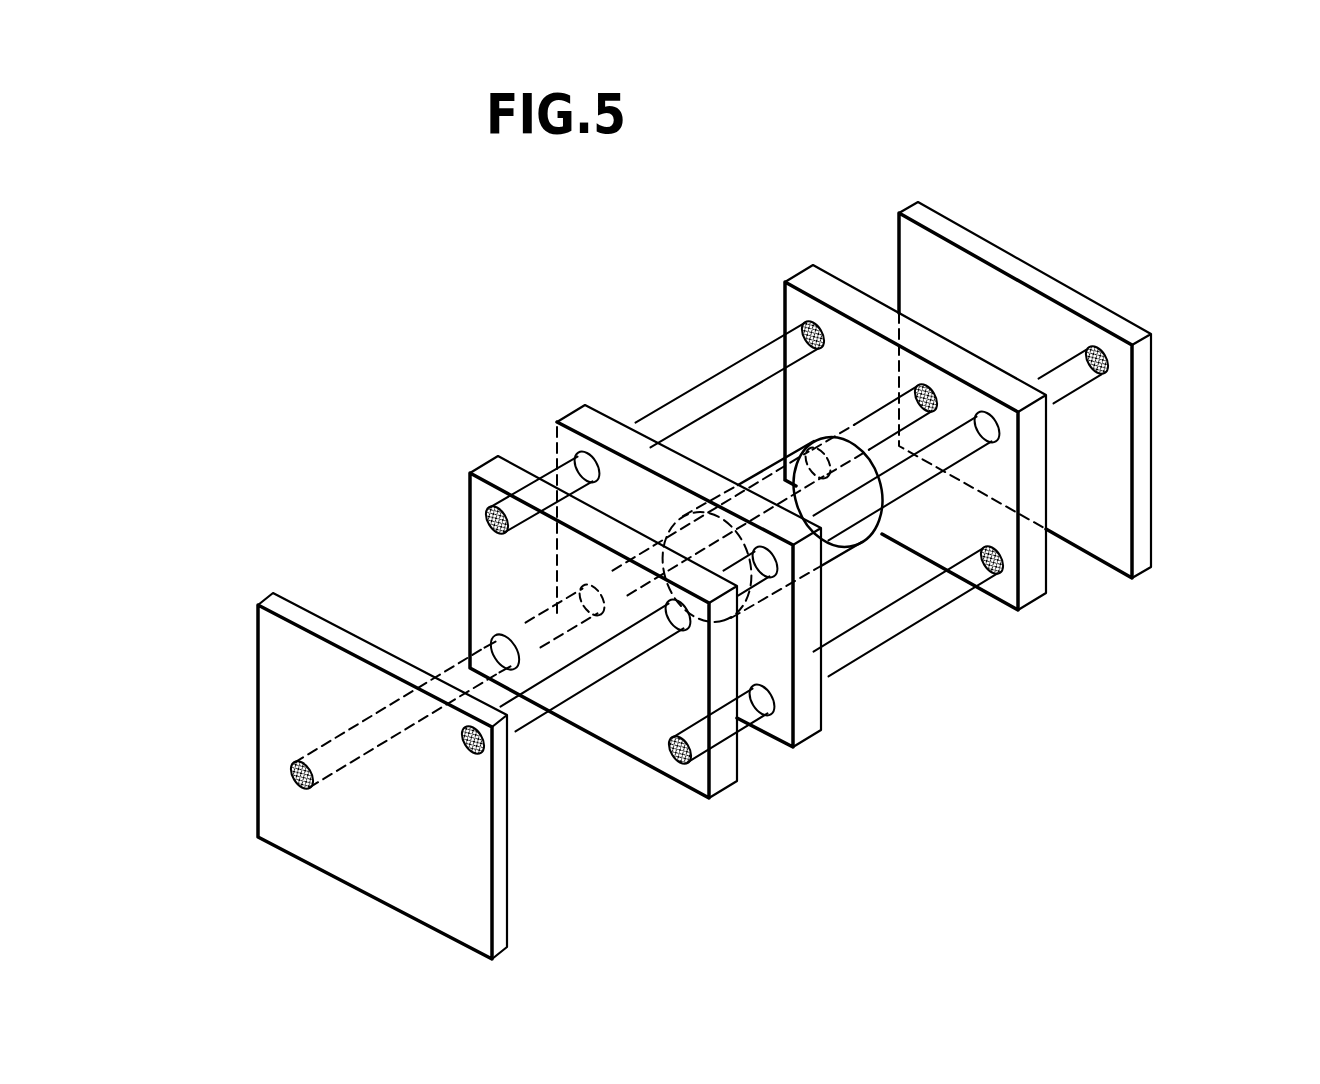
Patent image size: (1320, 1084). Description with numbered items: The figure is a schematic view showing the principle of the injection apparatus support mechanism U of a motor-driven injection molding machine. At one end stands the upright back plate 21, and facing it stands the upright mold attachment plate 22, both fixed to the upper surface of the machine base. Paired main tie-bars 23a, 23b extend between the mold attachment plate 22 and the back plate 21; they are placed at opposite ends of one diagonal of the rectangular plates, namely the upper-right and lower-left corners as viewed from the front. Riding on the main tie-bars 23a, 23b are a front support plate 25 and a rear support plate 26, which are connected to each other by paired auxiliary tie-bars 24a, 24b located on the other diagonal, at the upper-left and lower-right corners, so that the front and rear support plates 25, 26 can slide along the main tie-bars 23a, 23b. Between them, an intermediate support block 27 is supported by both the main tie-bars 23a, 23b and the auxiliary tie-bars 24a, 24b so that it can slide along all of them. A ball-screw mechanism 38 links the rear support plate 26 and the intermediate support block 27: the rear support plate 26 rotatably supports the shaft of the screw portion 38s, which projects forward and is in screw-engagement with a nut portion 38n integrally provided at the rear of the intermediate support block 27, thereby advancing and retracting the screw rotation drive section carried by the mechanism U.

The injection apparatus support mechanism U is at (592, 297).
The back plate 21 is at (1100, 300).
The mold attachment plate 22 is at (253, 658).
The main tie-bar 23a is at (1067, 400).
The main tie-bar 23b is at (453, 667).
The auxiliary tie-bar 24a is at (640, 415).
The auxiliary tie-bar 24b is at (960, 600).
The front support plate 25 is at (723, 795).
The rear support plate 26 is at (813, 263).
The intermediate support block 27 is at (810, 748).
The ball-screw mechanism 38 is at (797, 513).
The nut portion 38n is at (757, 457).
The screw portion 38s is at (867, 430).